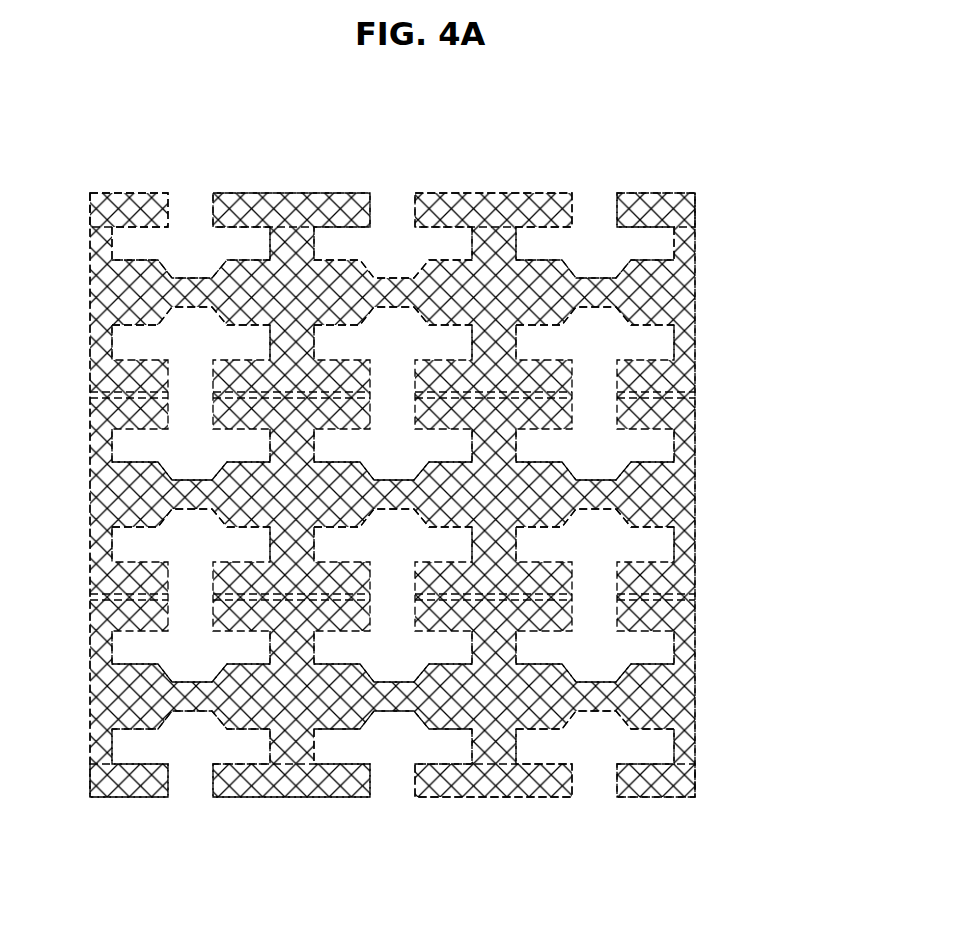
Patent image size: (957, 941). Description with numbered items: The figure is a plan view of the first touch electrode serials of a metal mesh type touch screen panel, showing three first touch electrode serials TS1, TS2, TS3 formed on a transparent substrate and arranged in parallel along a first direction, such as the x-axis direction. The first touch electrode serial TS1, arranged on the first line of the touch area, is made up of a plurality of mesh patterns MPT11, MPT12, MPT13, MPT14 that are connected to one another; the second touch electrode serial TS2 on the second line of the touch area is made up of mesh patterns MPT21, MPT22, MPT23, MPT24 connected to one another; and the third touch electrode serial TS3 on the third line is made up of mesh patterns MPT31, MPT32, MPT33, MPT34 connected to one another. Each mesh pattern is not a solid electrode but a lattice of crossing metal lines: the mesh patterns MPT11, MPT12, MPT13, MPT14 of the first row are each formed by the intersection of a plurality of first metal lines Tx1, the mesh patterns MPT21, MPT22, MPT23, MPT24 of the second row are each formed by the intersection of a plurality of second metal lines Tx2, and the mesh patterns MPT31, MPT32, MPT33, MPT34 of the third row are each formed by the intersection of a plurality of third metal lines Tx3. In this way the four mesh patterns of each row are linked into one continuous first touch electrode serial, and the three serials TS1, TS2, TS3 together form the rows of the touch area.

The 1-1 mesh pattern MPT11 is at (109, 176).
The 1-1 mesh pattern MPT12 is at (262, 176).
The 1-1 mesh pattern MPT13 is at (464, 176).
The 1-1 mesh pattern MPT14 is at (631, 176).
The 1-2 mesh pattern MPT21 is at (131, 543).
The 1-2 mesh pattern MPT22 is at (333, 543).
The 1-2 mesh pattern MPT23 is at (535, 543).
The 1-2 mesh pattern MPT24 is at (718, 547).
The 1-3 mesh pattern MPT31 is at (132, 817).
The 1-3 mesh pattern MPT32 is at (296, 817).
The 1-3 mesh pattern MPT33 is at (498, 817).
The 1-3 mesh pattern MPT34 is at (662, 817).
The 1-1 metal lines Tx1 is at (666, 205).
The 1-2 metal lines Tx2 is at (678, 491).
The 1-3 metal lines Tx3 is at (678, 693).
The 1-1 touch electrode serial TS1 is at (76, 195).
The 1-2 touch electrode serial TS2 is at (76, 397).
The 1-3 touch electrode serial TS3 is at (76, 599).